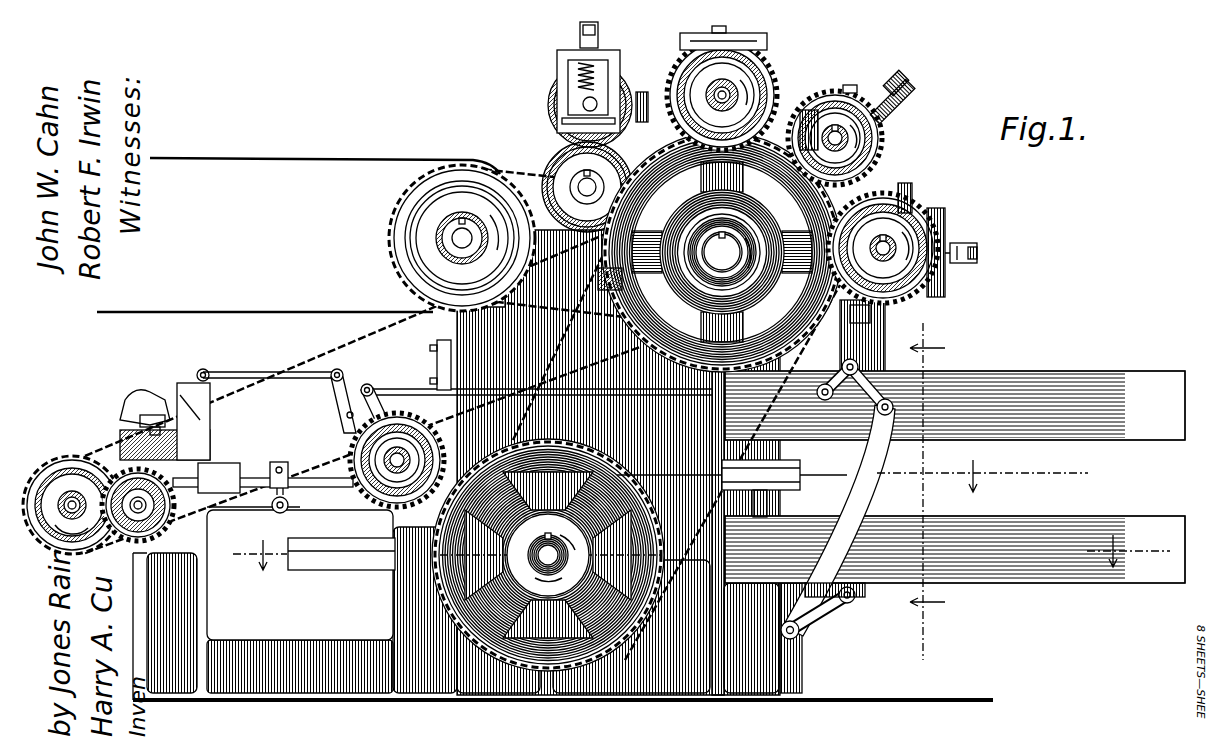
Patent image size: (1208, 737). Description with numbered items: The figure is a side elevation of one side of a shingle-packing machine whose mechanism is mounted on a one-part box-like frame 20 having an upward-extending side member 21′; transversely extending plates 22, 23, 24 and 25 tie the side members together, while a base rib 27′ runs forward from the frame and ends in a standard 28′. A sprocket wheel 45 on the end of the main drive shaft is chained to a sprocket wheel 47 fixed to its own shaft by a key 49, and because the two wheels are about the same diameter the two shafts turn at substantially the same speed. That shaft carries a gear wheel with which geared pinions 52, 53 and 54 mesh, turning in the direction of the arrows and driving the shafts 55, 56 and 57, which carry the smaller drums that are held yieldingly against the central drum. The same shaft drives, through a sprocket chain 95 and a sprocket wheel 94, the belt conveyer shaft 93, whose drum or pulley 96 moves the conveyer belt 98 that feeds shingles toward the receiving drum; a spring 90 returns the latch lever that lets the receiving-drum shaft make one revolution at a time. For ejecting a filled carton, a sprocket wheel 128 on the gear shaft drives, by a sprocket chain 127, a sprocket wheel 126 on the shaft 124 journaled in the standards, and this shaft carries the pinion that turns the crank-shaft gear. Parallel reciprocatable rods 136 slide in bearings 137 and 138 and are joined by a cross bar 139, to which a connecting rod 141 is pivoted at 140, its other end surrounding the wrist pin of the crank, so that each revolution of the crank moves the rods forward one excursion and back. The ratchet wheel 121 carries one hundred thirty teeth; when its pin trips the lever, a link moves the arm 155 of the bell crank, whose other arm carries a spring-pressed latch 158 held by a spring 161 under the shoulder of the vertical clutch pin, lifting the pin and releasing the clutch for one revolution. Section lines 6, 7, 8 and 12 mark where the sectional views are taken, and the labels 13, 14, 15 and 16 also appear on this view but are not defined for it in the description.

The transversely extending plate 22 is at (603, 53).
The transversely extending plate 23 is at (760, 43).
The shaft 55 is at (732, 88).
The key 49 is at (838, 135).
The geared pinion 52 is at (828, 105).
The vertically extending side member 21′ is at (868, 318).
The transversely extending plate 24 is at (855, 88).
The shaft 56 is at (900, 75).
The geared pinion 53 is at (908, 115).
The sprocket wheel 47 is at (891, 211).
The shaft 57 is at (890, 243).
The transversely extending plate 25 is at (946, 212).
The geared pinion 54 is at (978, 250).
The conveyer belt 98 is at (352, 158).
The sprocket wheel 94 is at (447, 219).
The sprocket chain 95 is at (512, 185).
The drum or pulley 96 is at (404, 210).
The belt conveyer shaft 93 is at (440, 242).
The sprocket wheel 45 is at (722, 252).
The sprocket wheel 128 is at (696, 282).
The spring 90 is at (610, 280).
The arm of bell crank 155 is at (200, 370).
The sprocket chain 127 is at (296, 368).
The box-like frame 20 is at (437, 350).
The sprocket wheel 126 is at (125, 405).
The spring pressed latch 158 is at (152, 415).
The shaft 124 is at (72, 479).
The shaft 13 is at (60, 500).
The spring 161 is at (166, 470).
The bearing 137 is at (232, 466).
The cross bar 139 is at (280, 462).
The reciprocatable rod 136 is at (302, 470).
The section line 12— 12 is at (263, 478).
The pivot 140 is at (300, 507).
The connecting rod 141 is at (272, 512).
The ratchet wheel 121 is at (383, 502).
The section line 6— 6 is at (701, 552).
The standard 28′ is at (210, 612).
The base rib 27′ is at (270, 640).
The wheel 15 is at (558, 553).
The hub 14 is at (565, 532).
The lever 16 is at (790, 432).
The bearing 138 is at (808, 468).
The section line 7— 7 is at (982, 476).
The section line 8— 8 is at (927, 491).